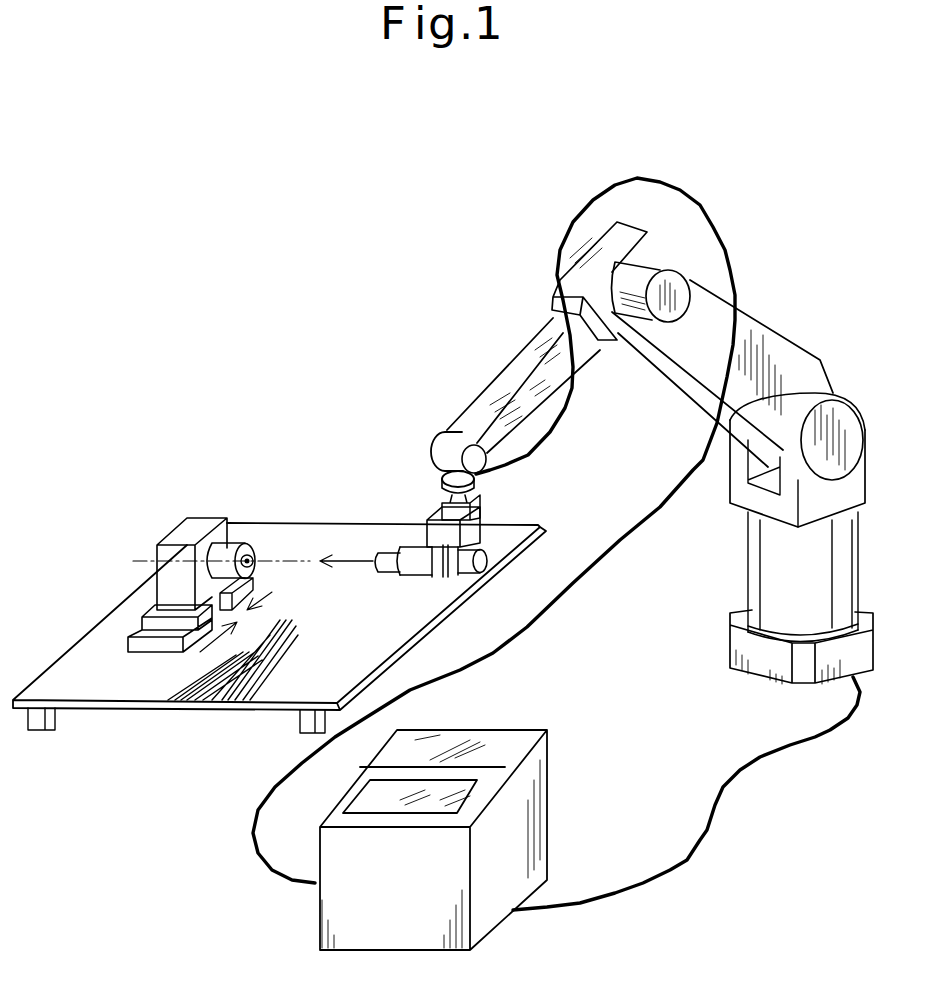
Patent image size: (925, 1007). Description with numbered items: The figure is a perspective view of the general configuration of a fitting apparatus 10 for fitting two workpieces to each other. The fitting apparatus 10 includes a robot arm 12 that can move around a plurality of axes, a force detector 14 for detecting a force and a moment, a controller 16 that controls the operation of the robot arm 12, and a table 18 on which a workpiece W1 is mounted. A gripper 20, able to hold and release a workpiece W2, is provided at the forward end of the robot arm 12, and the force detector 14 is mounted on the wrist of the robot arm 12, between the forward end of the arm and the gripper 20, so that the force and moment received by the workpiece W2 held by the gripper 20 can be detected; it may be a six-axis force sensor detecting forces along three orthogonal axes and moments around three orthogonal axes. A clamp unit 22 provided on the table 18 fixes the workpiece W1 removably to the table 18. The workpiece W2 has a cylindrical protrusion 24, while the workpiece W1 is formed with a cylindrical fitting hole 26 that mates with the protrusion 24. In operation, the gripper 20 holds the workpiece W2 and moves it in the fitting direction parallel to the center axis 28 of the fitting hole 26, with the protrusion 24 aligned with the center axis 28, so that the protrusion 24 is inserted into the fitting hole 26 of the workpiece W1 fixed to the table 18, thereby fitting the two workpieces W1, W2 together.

The fitting apparatus 10 is at (690, 160).
The robot arm 12 is at (513, 375).
The force detector 14 is at (437, 482).
The controller 16 is at (487, 920).
The table 18 is at (137, 607).
The gripper 20 is at (438, 537).
The clamp unit 22 is at (137, 634).
The cylindrical protrusion 24 is at (383, 570).
The cylindrical fitting hole 26 is at (257, 550).
The center axis 28 is at (145, 558).
The workpiece W1 is at (202, 527).
The workpiece W2 is at (420, 573).